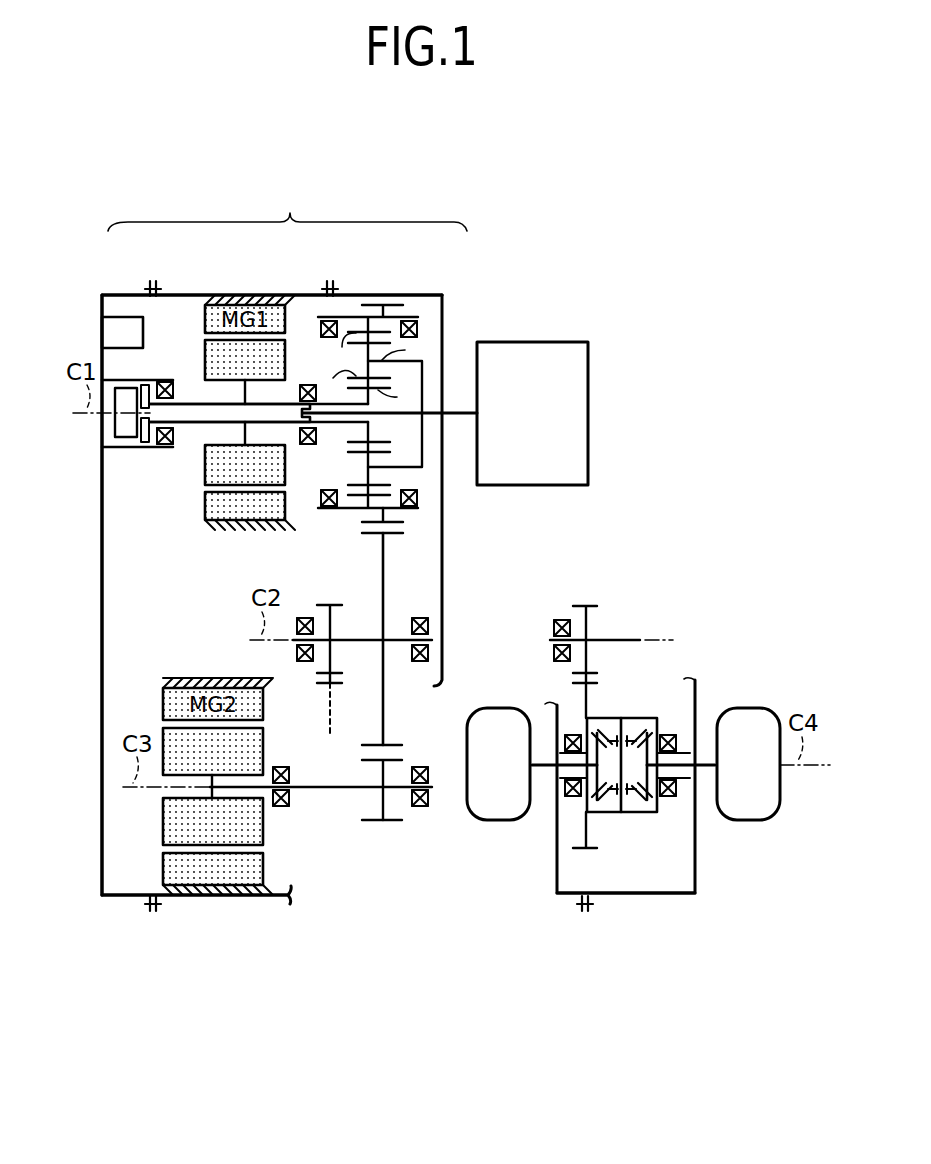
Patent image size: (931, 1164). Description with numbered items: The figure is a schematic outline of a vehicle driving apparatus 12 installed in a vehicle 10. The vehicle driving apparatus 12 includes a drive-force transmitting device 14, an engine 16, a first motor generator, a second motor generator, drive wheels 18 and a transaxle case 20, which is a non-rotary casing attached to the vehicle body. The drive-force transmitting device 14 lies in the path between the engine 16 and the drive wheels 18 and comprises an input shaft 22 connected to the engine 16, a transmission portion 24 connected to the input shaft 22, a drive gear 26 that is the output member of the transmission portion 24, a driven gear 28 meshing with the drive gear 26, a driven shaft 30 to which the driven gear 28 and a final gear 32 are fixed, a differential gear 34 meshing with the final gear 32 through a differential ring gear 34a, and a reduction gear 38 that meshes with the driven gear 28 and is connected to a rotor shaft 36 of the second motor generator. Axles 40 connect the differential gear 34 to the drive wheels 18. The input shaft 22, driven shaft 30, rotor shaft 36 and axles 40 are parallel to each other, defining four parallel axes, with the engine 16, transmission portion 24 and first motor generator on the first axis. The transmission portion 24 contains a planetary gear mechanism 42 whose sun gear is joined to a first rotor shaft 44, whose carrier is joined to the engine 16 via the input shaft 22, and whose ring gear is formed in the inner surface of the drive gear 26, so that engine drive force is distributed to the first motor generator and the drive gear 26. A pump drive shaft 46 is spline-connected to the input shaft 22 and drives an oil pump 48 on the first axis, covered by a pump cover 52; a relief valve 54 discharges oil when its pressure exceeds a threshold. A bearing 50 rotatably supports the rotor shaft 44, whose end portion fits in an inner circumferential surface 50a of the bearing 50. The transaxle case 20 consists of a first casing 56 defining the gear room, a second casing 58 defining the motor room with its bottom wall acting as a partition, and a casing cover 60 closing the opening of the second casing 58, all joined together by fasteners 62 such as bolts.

The vehicle 10 is at (493, 174).
The vehicle driving apparatus 12 is at (611, 267).
The drive-force transmitting device 14 is at (289, 952).
The engine 16 is at (518, 478).
The drive wheels 18 is at (498, 813).
The transaxle case 20 is at (287, 209).
The input shaft 22 is at (428, 416).
The transmission portion 24 is at (366, 288).
The drive gear 26 is at (396, 520).
The driven gear 28 is at (380, 536).
The driven shaft 30 is at (335, 638).
The final gear 32 is at (335, 672).
The differential gear 34 is at (630, 840).
The differential ring gear 34a is at (333, 686).
The MG2 rotor shaft 36 is at (308, 784).
The reduction gear 38 is at (378, 818).
The axles 40 is at (541, 770).
The planetary gear mechanism 42 is at (350, 514).
The MG1 rotor shaft 44 is at (190, 402).
The pump drive shaft 46 is at (182, 424).
The oil pump 48 is at (125, 450).
The bearing 50 is at (176, 386).
The inner circumferential surface 50a is at (176, 424).
The pump cover 52 is at (143, 450).
The relief valve 54 is at (92, 331).
The first casing 56 is at (420, 294).
The second casing 58 is at (187, 293).
The casing cover 60 is at (103, 293).
The fasteners 62 is at (149, 288).